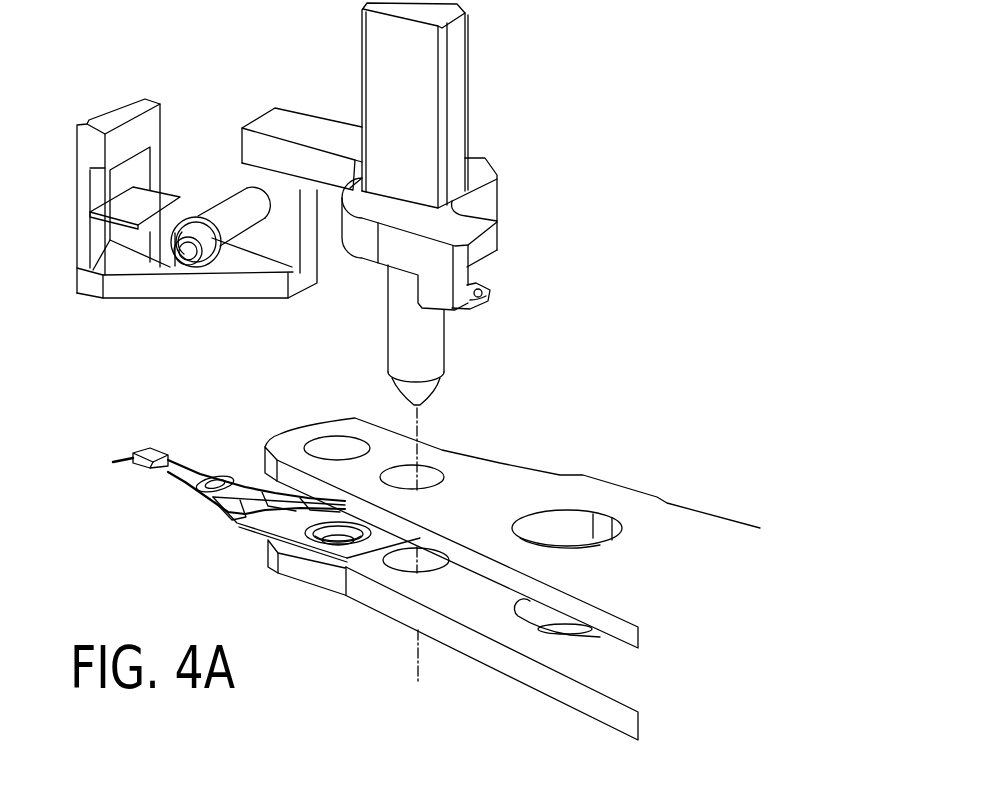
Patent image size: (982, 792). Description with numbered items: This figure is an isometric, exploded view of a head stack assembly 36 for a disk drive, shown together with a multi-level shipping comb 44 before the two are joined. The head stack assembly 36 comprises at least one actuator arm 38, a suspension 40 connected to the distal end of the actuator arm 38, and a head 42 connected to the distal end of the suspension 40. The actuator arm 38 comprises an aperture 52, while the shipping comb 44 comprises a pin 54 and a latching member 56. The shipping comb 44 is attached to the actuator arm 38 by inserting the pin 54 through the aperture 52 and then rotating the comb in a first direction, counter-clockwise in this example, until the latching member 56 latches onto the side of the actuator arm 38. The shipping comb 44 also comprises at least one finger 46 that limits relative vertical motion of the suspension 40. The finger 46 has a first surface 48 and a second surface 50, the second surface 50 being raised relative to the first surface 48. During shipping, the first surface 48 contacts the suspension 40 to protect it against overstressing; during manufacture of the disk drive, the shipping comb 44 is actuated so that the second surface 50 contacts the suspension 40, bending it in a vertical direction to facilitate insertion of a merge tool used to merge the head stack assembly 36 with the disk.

The head stack assembly 36 is at (745, 149).
The actuator arm 38 is at (620, 490).
The suspension 40 is at (190, 492).
The head 42 is at (137, 467).
The multi-level shipping comb 44 is at (492, 108).
The finger 46 is at (187, 253).
The first surface 48 is at (233, 203).
The second surface 50 is at (198, 220).
The aperture 52 is at (432, 473).
The pin 54 is at (388, 340).
The latching member 56 is at (490, 292).